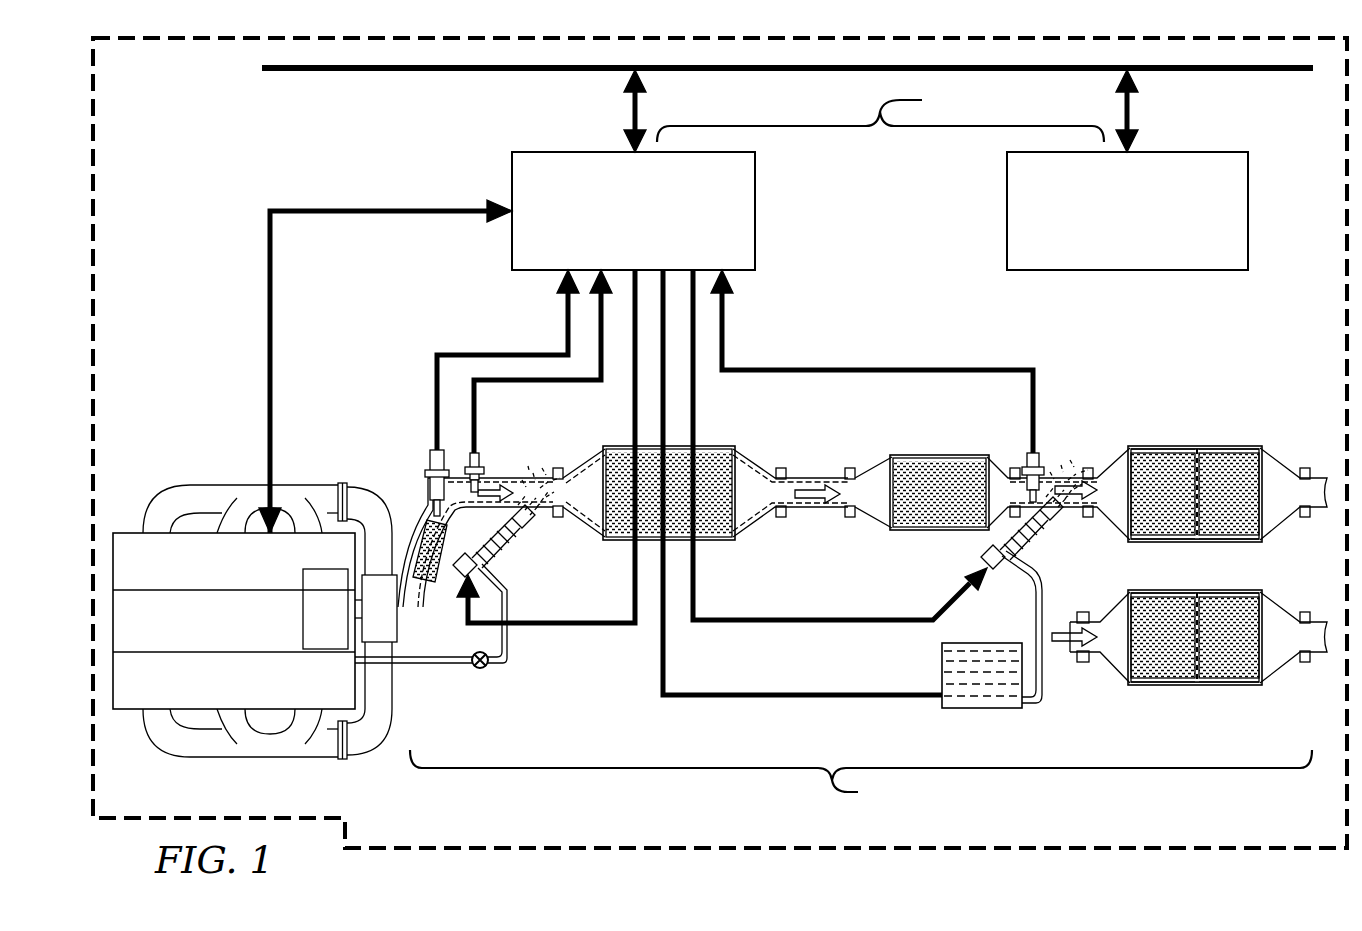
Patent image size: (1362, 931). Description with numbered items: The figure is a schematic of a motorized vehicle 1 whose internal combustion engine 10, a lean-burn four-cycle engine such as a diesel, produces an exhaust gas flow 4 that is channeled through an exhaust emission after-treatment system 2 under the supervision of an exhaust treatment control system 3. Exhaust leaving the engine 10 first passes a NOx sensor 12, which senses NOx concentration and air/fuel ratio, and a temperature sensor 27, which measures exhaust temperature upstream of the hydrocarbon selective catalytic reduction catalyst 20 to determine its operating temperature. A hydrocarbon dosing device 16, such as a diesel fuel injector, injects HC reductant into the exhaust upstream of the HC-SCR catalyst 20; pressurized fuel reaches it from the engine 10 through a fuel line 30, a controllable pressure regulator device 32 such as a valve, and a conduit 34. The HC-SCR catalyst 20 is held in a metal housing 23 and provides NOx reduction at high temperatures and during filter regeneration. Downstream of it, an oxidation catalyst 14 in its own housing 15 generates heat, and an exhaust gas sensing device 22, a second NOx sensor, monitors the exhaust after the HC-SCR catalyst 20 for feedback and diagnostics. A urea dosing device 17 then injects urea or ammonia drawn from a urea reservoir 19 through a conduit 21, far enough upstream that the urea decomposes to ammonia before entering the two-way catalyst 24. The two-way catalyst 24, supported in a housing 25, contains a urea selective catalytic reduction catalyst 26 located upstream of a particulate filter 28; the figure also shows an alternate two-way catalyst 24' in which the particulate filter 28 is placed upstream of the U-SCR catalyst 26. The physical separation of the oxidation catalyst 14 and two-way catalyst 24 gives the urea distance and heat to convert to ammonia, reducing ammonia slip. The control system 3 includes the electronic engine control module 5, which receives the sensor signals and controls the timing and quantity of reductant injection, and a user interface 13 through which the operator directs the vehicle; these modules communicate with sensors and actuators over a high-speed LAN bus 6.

The motorized vehicle 1 is at (712, 36).
The exhaust emission after-treatment system 2 is at (862, 632).
The exhaust treatment control system 3 is at (880, 114).
The exhaust gas flow 4 is at (495, 490).
The electronic engine control module 5 is at (565, 150).
The LAN bus 6 is at (462, 74).
The internal combustion engine 10 is at (173, 490).
The NOx sensor 12 is at (422, 468).
The user interface 13 is at (1207, 150).
The oxidation catalyst 14 is at (965, 455).
The housing 15 is at (900, 460).
The hydrocarbon dosing device 16 is at (498, 540).
The urea dosing device 17 is at (1022, 548).
The urea reservoir 19 is at (995, 688).
The hydrocarbon selective catalytic reduction catalyst 20 is at (722, 452).
The conduit 21 is at (1040, 598).
The exhaust gas sensing device 22 is at (1045, 468).
The housing 23 is at (700, 450).
The two-way catalyst 24 is at (1195, 459).
The two-way catalyst 24' is at (1195, 673).
The housing 25 is at (1185, 448).
The urea selective catalytic reduction catalyst 26 is at (1163, 452).
The temperature sensor 27 is at (483, 462).
The particulate filter 28 is at (1235, 452).
The fuel line 30 is at (415, 663).
The controllable pressure regulator device 32 is at (484, 668).
The conduit 34 is at (507, 635).